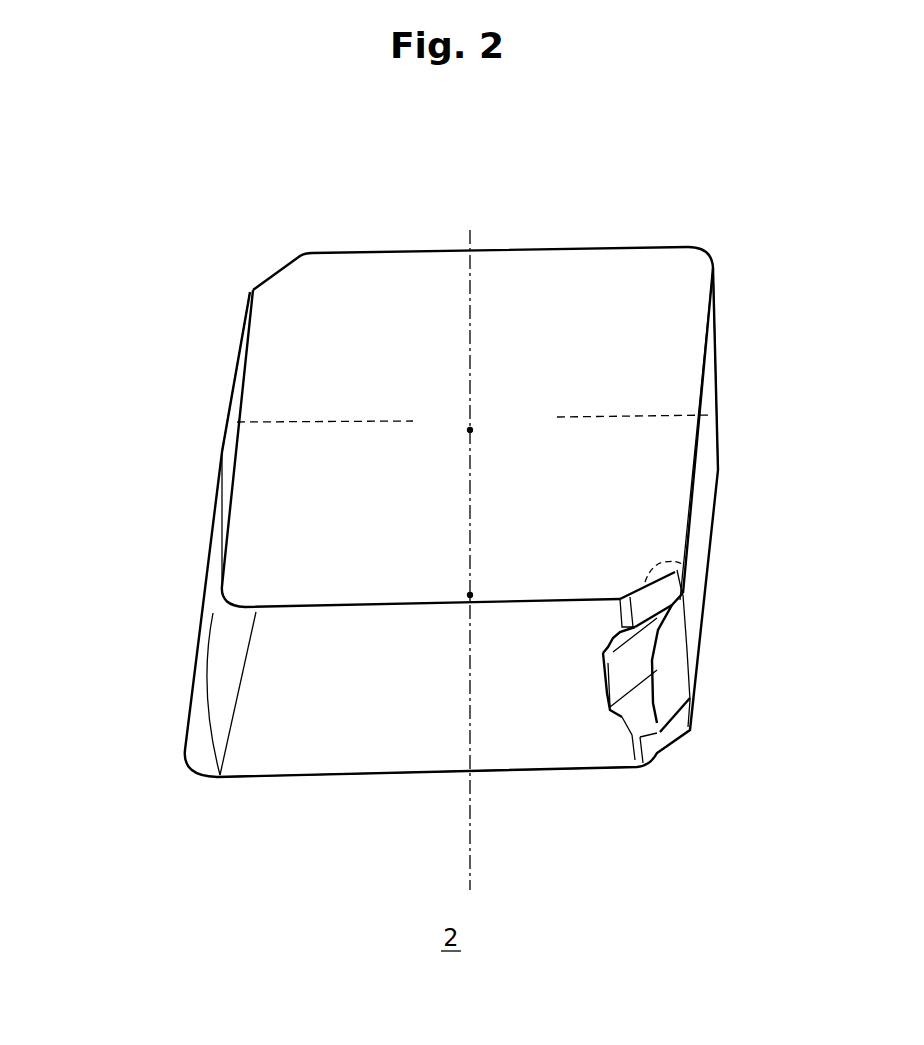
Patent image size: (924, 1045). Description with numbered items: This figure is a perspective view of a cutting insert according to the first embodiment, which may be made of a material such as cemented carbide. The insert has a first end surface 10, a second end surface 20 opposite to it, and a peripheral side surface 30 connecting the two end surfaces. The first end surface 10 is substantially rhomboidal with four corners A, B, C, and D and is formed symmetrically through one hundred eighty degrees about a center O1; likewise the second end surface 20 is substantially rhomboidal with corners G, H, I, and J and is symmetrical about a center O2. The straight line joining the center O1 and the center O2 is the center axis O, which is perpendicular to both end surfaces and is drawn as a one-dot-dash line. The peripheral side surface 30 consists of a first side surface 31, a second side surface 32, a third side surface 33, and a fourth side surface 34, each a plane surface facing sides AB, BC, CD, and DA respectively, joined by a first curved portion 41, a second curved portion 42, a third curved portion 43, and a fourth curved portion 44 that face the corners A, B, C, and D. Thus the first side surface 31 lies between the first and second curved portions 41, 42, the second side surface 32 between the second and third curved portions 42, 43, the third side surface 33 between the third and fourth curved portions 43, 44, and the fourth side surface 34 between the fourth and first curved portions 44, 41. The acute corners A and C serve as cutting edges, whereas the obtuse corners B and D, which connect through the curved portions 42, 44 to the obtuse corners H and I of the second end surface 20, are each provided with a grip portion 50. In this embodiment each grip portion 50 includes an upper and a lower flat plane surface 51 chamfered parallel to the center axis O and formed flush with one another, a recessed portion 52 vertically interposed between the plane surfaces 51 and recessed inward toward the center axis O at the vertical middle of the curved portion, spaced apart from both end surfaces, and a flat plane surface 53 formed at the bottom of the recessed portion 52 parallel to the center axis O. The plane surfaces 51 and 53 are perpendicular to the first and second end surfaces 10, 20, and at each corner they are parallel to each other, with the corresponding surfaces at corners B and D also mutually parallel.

The first end surface 10 is at (489, 532).
The second end surface 20 is at (367, 730).
The peripheral side surface 30 is at (343, 703).
The first side surface 31 is at (437, 713).
The second side surface 32 is at (700, 516).
The third side surface 33 is at (568, 303).
The fourth side surface 34 is at (218, 520).
The first curved portion 41 is at (213, 692).
The second curved portion 42 is at (638, 677).
The third curved portion 43 is at (718, 323).
The fourth curved portion 44 is at (240, 360).
The grip portion 50 is at (516, 492).
The plane surface 51 is at (655, 597).
The recessed portion 52 is at (672, 685).
The plane surface 53 is at (668, 647).
The center axis O is at (468, 545).
The center of the first end surface O1 is at (480, 428).
The center of the second end surface O2 is at (480, 592).
The corner A is at (225, 580).
The corner B is at (683, 563).
The corner C is at (705, 258).
The corner D is at (278, 272).
The corner G is at (190, 772).
The corner H is at (675, 745).
The corner I is at (722, 430).
The corner J is at (235, 430).